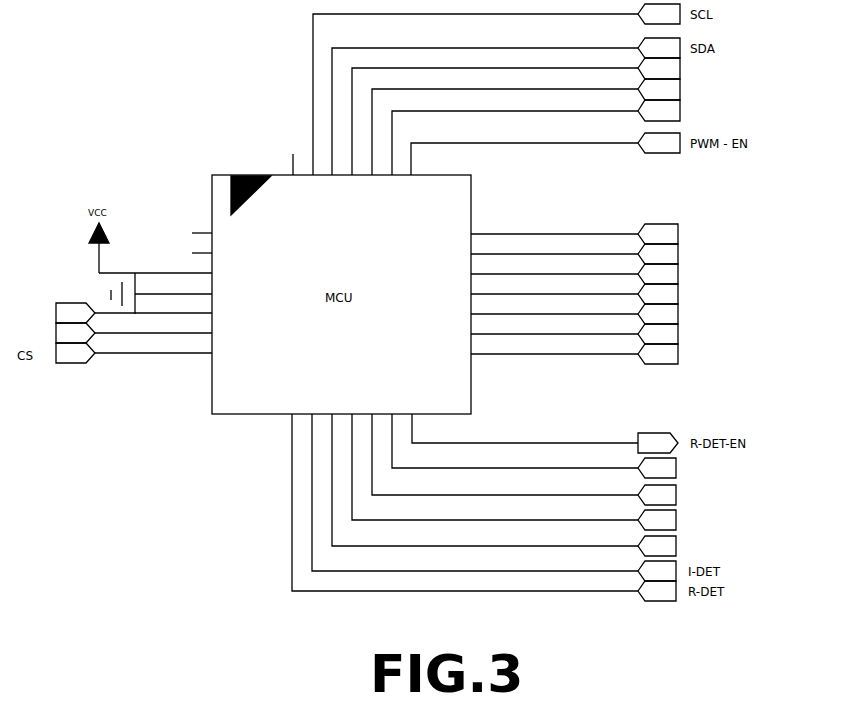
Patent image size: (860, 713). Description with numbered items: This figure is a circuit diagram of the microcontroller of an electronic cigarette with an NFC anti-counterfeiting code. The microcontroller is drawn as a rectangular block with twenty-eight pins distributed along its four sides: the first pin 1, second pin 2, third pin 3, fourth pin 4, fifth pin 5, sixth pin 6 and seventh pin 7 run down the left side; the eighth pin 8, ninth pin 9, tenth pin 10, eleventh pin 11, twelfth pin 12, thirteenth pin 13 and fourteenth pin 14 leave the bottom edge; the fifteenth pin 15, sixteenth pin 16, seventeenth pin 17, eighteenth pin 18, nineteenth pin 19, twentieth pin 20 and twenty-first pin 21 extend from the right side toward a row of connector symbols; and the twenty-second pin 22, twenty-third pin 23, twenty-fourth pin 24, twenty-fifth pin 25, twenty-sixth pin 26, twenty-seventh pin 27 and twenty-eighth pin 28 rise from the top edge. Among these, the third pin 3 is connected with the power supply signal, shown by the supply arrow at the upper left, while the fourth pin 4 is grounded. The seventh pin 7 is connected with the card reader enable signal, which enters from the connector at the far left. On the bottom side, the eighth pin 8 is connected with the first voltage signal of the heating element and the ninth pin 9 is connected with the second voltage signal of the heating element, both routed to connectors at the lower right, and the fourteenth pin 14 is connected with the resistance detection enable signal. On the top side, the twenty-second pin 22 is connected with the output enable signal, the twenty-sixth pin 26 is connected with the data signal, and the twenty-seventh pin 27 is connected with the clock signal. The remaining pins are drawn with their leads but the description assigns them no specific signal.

The first pin 1 is at (202, 226).
The second pin 2 is at (202, 246).
The third pin 3 is at (155, 266).
The fourth pin 4 is at (173, 287).
The fifth pin 5 is at (153, 306).
The sixth pin 6 is at (153, 326).
The seventh pin 7 is at (153, 346).
The eighth pin 8 is at (465, 502).
The ninth pin 9 is at (475, 492).
The tenth pin 10 is at (485, 480).
The eleventh pin 11 is at (495, 467).
The twelfth pin 12 is at (505, 454).
The thirteenth pin 13 is at (515, 441).
The fourteenth pin 14 is at (525, 428).
The fifteenth pin 15 is at (554, 347).
The sixteenth pin 16 is at (554, 327).
The seventeenth pin 17 is at (554, 307).
The eighteenth pin 18 is at (554, 287).
The nineteenth pin 19 is at (554, 267).
The twentieth pin 20 is at (554, 247).
The twenty-first pin 21 is at (554, 227).
The twenty-second pin 22 is at (524, 159).
The twenty-third pin 23 is at (515, 143).
The twenty-fourth pin 24 is at (505, 132).
The twenty-fifth pin 25 is at (495, 121).
The twenty-sixth pin 26 is at (485, 111).
The twenty-seventh pin 27 is at (475, 94).
The twenty-eighth pin 28 is at (301, 164).